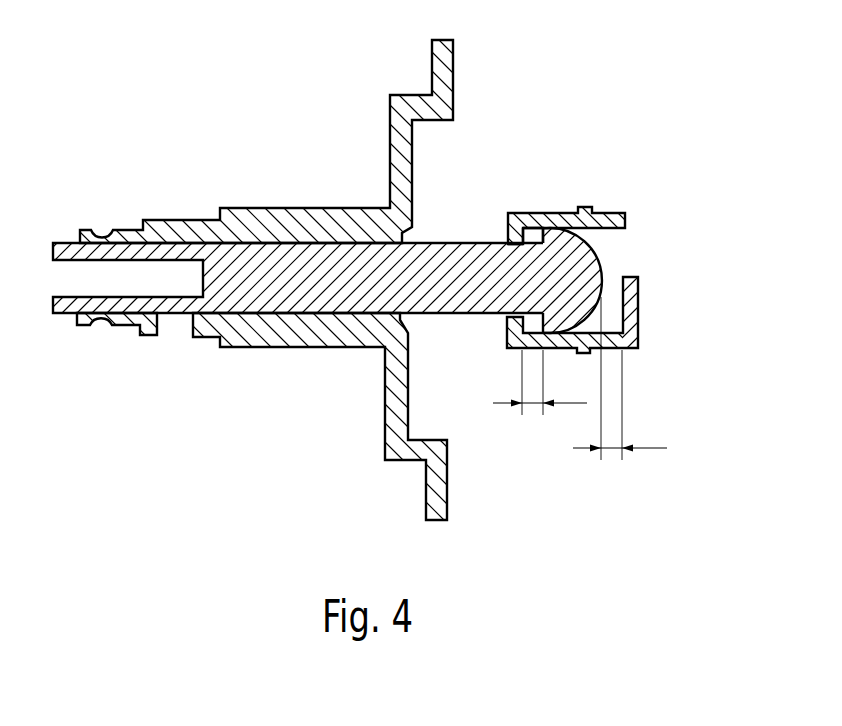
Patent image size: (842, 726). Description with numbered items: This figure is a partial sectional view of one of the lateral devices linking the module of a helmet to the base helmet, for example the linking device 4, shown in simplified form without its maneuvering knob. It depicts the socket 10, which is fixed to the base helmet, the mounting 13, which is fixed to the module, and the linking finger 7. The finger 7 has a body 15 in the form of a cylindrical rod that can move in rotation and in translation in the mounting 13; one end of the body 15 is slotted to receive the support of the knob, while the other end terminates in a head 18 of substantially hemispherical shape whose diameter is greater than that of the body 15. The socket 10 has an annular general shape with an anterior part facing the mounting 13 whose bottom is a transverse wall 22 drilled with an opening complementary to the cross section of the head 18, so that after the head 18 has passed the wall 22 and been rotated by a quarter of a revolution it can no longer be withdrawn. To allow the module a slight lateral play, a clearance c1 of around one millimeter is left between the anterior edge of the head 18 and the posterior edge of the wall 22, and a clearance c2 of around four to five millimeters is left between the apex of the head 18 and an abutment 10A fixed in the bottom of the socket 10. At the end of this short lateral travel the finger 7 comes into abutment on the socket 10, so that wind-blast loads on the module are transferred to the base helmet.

The linking device 4 is at (400, 281).
The linking finger 7 is at (598, 280).
The socket 10 is at (563, 212).
The abutment 10A is at (640, 319).
The mounting 13 is at (285, 208).
The body 15 is at (389, 226).
The head 18 is at (592, 238).
The transverse wall 22 is at (510, 221).
The clearance C1 c1 is at (540, 382).
The clearance C2 c2 is at (623, 378).